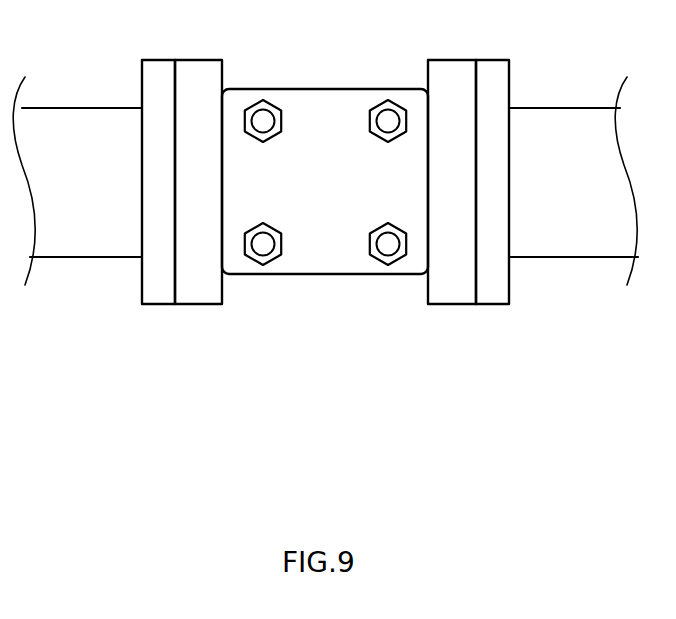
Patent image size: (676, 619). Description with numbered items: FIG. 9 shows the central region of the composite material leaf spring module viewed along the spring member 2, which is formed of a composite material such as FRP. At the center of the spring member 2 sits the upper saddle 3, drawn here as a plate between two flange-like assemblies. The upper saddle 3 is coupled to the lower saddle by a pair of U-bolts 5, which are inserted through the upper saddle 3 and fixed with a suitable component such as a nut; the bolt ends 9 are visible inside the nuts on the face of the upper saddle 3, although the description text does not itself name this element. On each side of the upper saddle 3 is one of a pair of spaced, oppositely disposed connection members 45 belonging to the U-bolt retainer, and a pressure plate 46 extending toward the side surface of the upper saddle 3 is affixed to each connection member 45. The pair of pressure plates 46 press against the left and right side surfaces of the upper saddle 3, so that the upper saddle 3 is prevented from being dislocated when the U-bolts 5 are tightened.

The spring member 2 is at (569, 242).
The upper saddle 3 is at (325, 261).
The U-bolt 5 is at (264, 115).
The bolt 9 is at (263, 115).
The connection member 45 is at (162, 292).
The pressure plate 46 is at (200, 292).